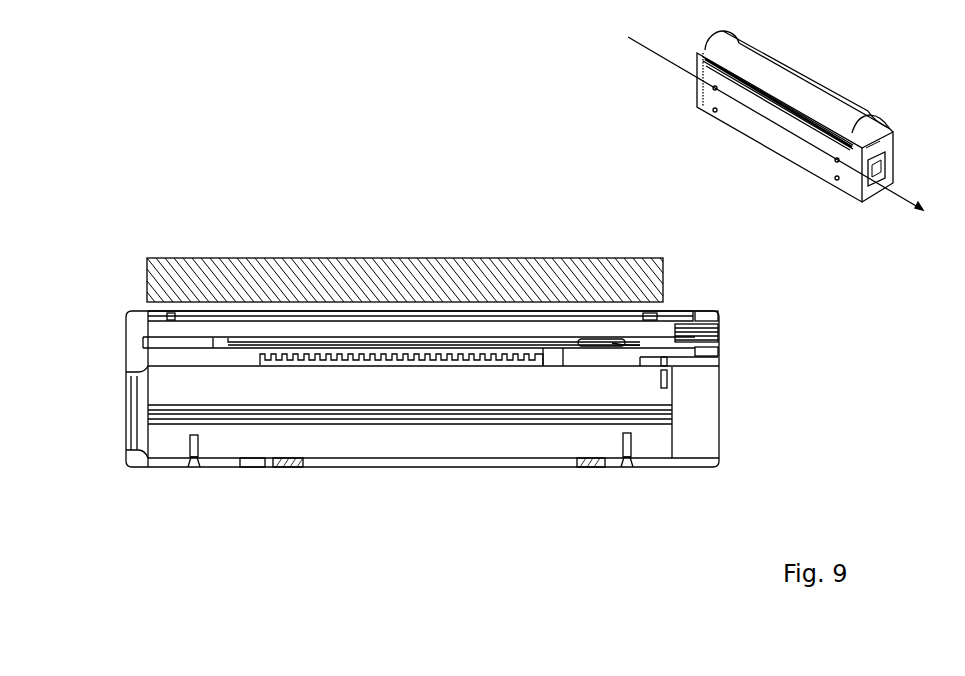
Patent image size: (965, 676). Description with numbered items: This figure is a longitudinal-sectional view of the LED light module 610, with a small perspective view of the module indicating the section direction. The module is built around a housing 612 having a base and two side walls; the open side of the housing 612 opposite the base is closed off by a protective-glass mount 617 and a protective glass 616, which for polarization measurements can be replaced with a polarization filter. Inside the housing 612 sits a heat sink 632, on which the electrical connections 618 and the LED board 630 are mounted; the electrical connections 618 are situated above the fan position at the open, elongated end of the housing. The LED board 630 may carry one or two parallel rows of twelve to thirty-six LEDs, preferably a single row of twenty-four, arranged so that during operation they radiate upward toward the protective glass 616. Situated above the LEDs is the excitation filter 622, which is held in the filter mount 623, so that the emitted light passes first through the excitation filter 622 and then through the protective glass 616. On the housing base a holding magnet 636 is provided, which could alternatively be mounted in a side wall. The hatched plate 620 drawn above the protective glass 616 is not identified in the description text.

The LED light module 610 is at (241, 208).
The housing 612 is at (335, 463).
The protective glass 616 is at (483, 312).
The protective-glass mount 617 is at (677, 316).
The electrical connections 618 is at (718, 333).
The platen 620 is at (355, 272).
The excitation filter 622 is at (268, 338).
The filter mount 623 is at (718, 347).
The LED board 630 is at (410, 354).
The heat sink 632 is at (407, 445).
The holding magnet 636 is at (600, 462).